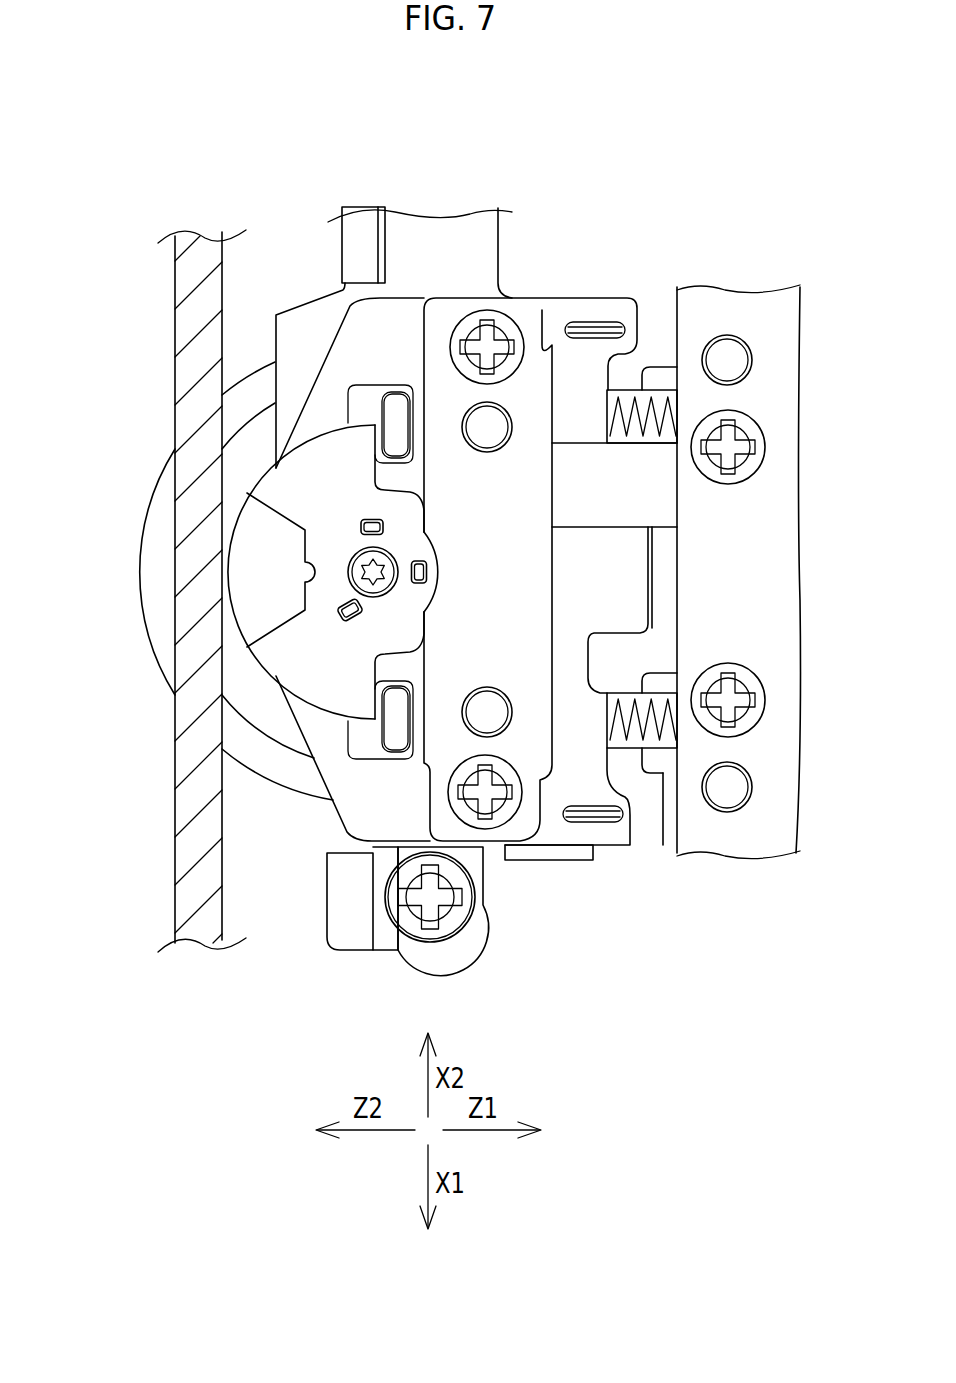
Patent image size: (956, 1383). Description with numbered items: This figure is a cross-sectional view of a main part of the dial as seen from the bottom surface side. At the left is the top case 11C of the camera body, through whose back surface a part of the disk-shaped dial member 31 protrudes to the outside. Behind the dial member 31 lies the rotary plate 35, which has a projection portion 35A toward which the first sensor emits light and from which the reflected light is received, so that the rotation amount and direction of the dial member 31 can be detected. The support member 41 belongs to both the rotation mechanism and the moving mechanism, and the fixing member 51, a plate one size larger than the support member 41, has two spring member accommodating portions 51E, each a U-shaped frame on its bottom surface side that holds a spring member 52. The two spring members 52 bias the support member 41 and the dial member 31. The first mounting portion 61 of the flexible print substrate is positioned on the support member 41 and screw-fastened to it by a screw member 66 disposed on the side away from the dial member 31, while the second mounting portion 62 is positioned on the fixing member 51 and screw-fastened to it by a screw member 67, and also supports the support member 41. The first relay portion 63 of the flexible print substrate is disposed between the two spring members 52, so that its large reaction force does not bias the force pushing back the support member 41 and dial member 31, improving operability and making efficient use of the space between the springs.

The top case 11C is at (186, 815).
The dial member 31 is at (146, 532).
The rotary plate 35 is at (312, 712).
The projection portion 35A is at (368, 478).
The support member 41 is at (318, 371).
The fixing member 51 is at (310, 312).
The spring member accommodating portion 51E is at (653, 378).
The spring member 52 is at (635, 392).
The first mounting portion 61 is at (458, 296).
The second mounting portion 62 is at (762, 280).
The first relay portion 63 is at (588, 468).
The screw member 66 is at (470, 363).
The screw member 67 is at (715, 473).